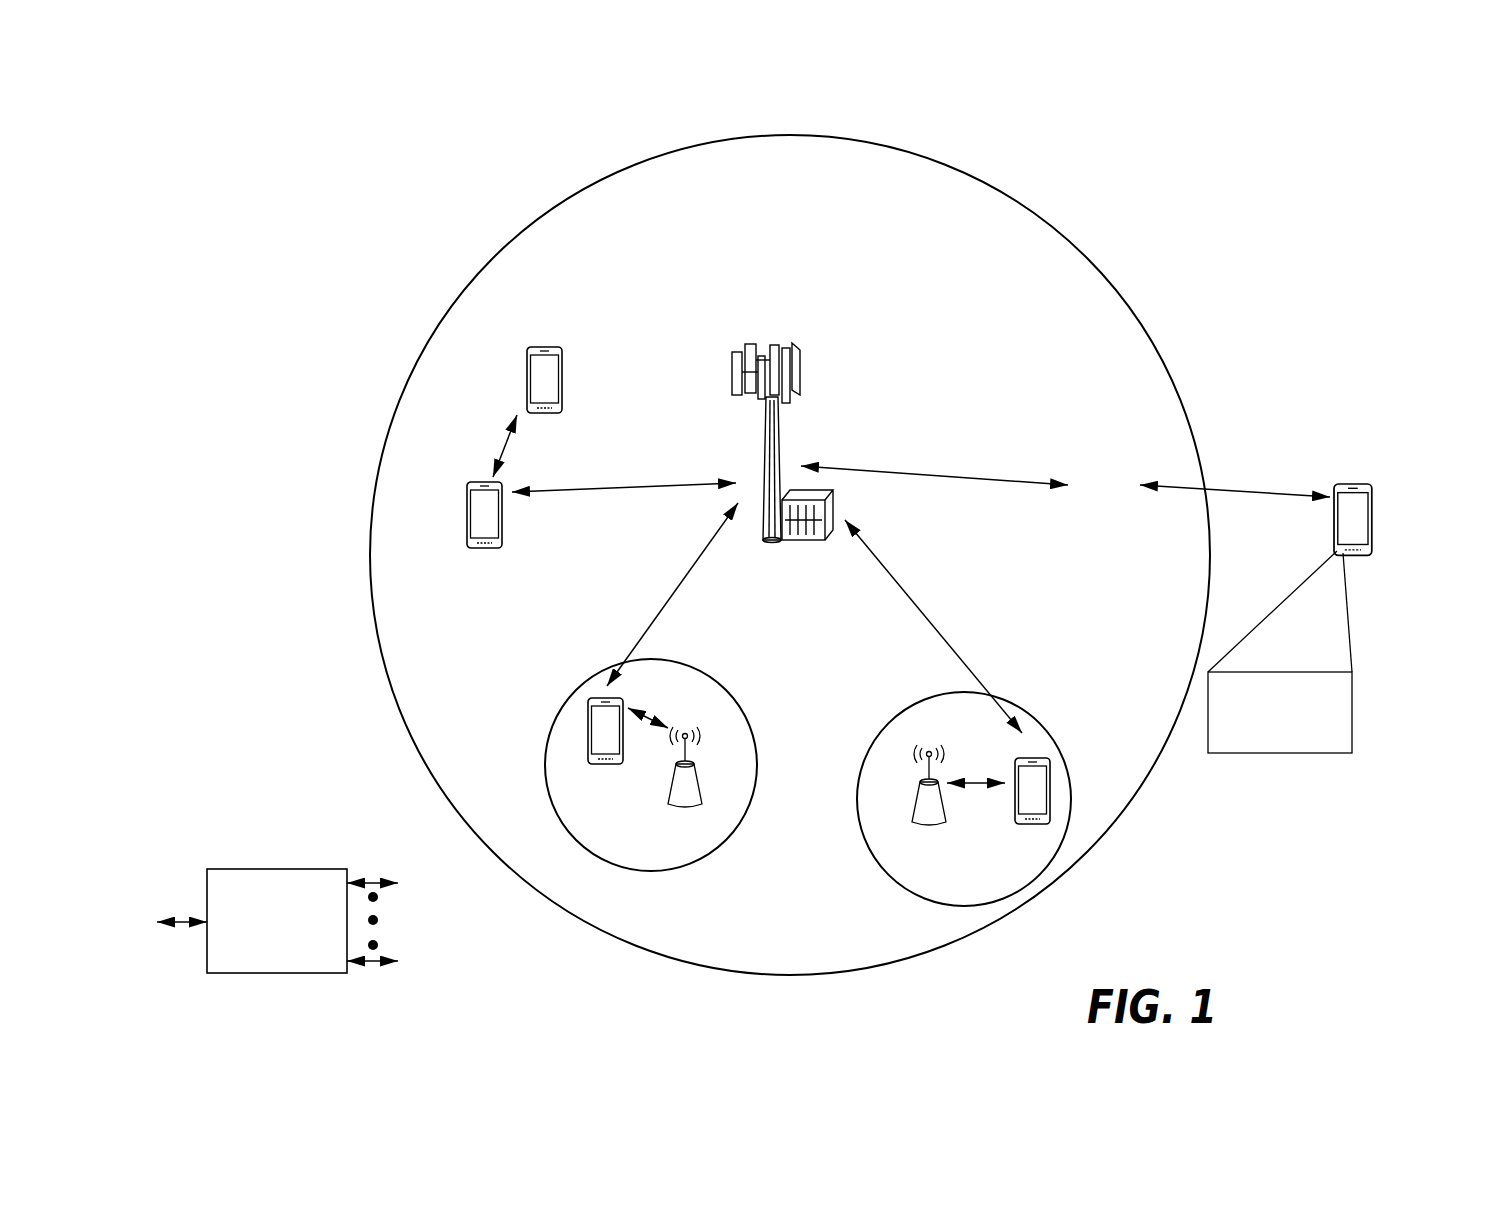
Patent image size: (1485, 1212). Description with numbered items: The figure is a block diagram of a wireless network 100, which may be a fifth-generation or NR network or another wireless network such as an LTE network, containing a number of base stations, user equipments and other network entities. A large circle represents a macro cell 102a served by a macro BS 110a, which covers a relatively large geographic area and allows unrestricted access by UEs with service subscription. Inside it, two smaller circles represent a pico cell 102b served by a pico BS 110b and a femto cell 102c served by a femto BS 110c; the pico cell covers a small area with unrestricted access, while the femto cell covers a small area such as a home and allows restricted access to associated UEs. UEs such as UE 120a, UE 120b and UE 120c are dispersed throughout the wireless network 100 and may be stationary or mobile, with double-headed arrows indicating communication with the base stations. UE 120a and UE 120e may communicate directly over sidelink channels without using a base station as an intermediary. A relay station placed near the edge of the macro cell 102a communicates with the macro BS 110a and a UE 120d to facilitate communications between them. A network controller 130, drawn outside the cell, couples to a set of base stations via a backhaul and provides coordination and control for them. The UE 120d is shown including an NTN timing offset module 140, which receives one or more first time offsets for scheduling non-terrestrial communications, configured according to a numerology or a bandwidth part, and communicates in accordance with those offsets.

The wireless network 100 is at (262, 131).
The macro cell 102a is at (1067, 240).
The pico cell 102b is at (737, 700).
The femto cell 102c is at (902, 713).
The macro BS 110a is at (776, 340).
The pico BS 110b is at (705, 788).
The femto BS 110c is at (912, 808).
The UE 120a is at (785, 699).
The UE 120b is at (590, 764).
The UE 120c is at (1032, 825).
The UE 120d is at (1367, 483).
The UE 120e is at (527, 365).
The network controller 130 is at (275, 869).
The NTN timing offset module 140 is at (1280, 754).